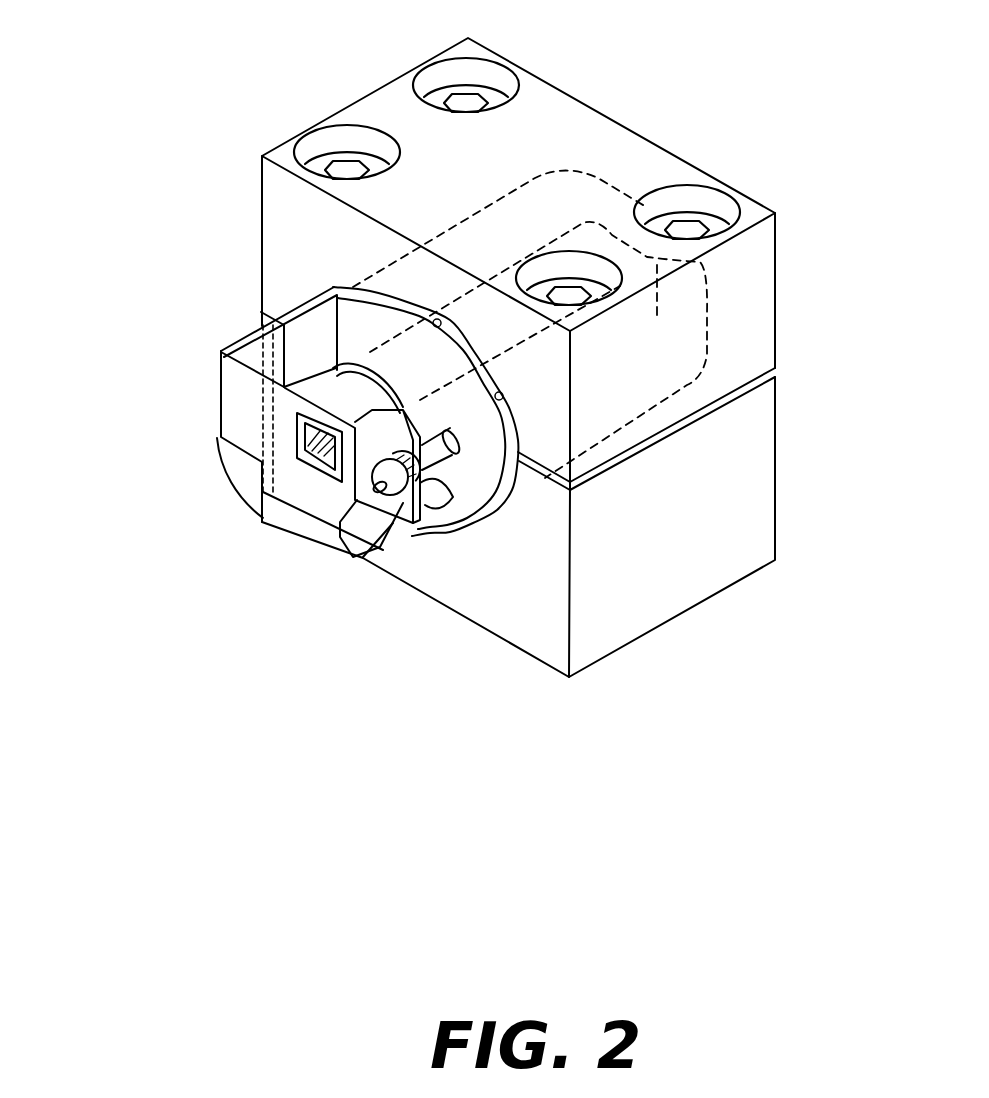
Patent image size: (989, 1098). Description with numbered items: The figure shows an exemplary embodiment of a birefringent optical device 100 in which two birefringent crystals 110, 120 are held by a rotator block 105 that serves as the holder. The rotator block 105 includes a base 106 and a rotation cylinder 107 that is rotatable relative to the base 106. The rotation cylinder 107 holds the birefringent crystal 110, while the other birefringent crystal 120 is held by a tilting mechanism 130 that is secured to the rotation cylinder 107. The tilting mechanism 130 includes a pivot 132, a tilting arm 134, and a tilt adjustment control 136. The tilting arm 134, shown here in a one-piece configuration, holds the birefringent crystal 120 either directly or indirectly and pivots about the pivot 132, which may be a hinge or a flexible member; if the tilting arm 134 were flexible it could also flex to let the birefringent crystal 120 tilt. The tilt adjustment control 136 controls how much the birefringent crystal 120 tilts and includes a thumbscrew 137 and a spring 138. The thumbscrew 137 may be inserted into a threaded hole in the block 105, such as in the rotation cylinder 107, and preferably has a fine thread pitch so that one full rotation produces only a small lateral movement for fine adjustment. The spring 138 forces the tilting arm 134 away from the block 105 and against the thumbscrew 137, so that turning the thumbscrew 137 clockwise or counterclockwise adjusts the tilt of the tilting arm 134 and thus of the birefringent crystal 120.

The birefringent optical device 100 is at (88, 39).
The rotator block 105 is at (258, 218).
The base 106 is at (760, 248).
The rotation cylinder 107 is at (706, 357).
The birefringent crystal 110 is at (640, 318).
The birefringent crystal 120 is at (330, 457).
The tilting mechanism 130 is at (240, 420).
The pivot 132 is at (247, 333).
The tilting arm 134 is at (270, 498).
The tilt adjustment control 136 is at (385, 495).
The thumbscrew 137 is at (365, 495).
The spring 138 is at (435, 505).